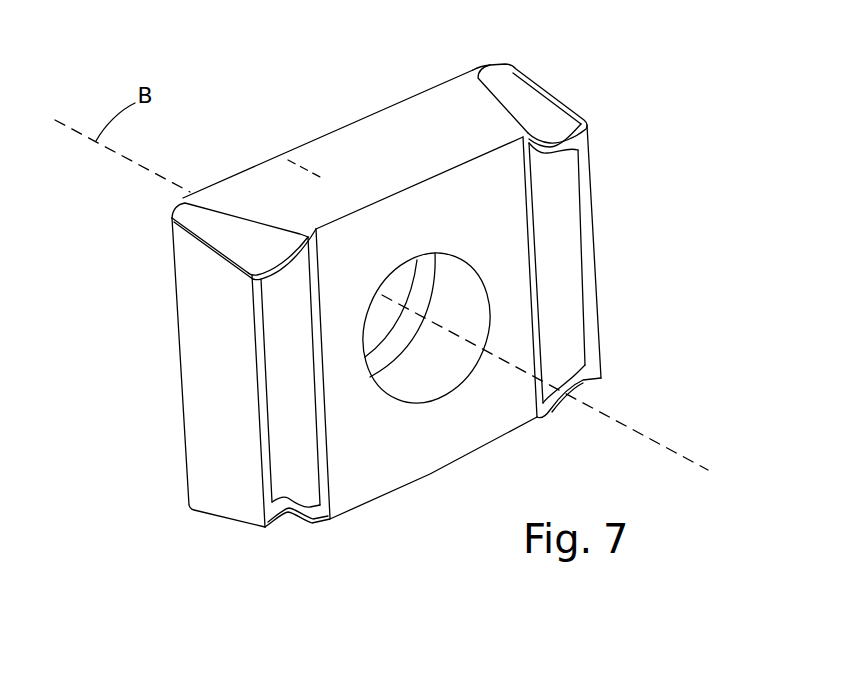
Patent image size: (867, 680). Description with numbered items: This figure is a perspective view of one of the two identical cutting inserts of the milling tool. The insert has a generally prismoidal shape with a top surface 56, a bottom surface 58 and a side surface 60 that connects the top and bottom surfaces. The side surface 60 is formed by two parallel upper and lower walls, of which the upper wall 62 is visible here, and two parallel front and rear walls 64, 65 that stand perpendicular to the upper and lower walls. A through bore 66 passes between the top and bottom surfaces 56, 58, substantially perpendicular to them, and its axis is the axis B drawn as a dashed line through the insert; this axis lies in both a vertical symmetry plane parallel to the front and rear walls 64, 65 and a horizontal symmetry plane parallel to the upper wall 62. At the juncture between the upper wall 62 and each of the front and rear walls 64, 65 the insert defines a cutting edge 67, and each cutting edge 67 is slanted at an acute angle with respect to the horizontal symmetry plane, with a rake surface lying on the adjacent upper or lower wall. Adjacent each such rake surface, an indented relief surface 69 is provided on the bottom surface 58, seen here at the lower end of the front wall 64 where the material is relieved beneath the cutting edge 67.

The top surface 56 is at (288, 160).
The bottom surface 58 is at (527, 406).
The side surface 60 is at (205, 322).
The upper wall 62 is at (398, 151).
The front wall 64 is at (215, 423).
The rear wall 65 is at (628, 202).
The through bore 66 is at (453, 303).
The cutting edge 67 is at (552, 97).
The indented relief surface 69 is at (290, 480).